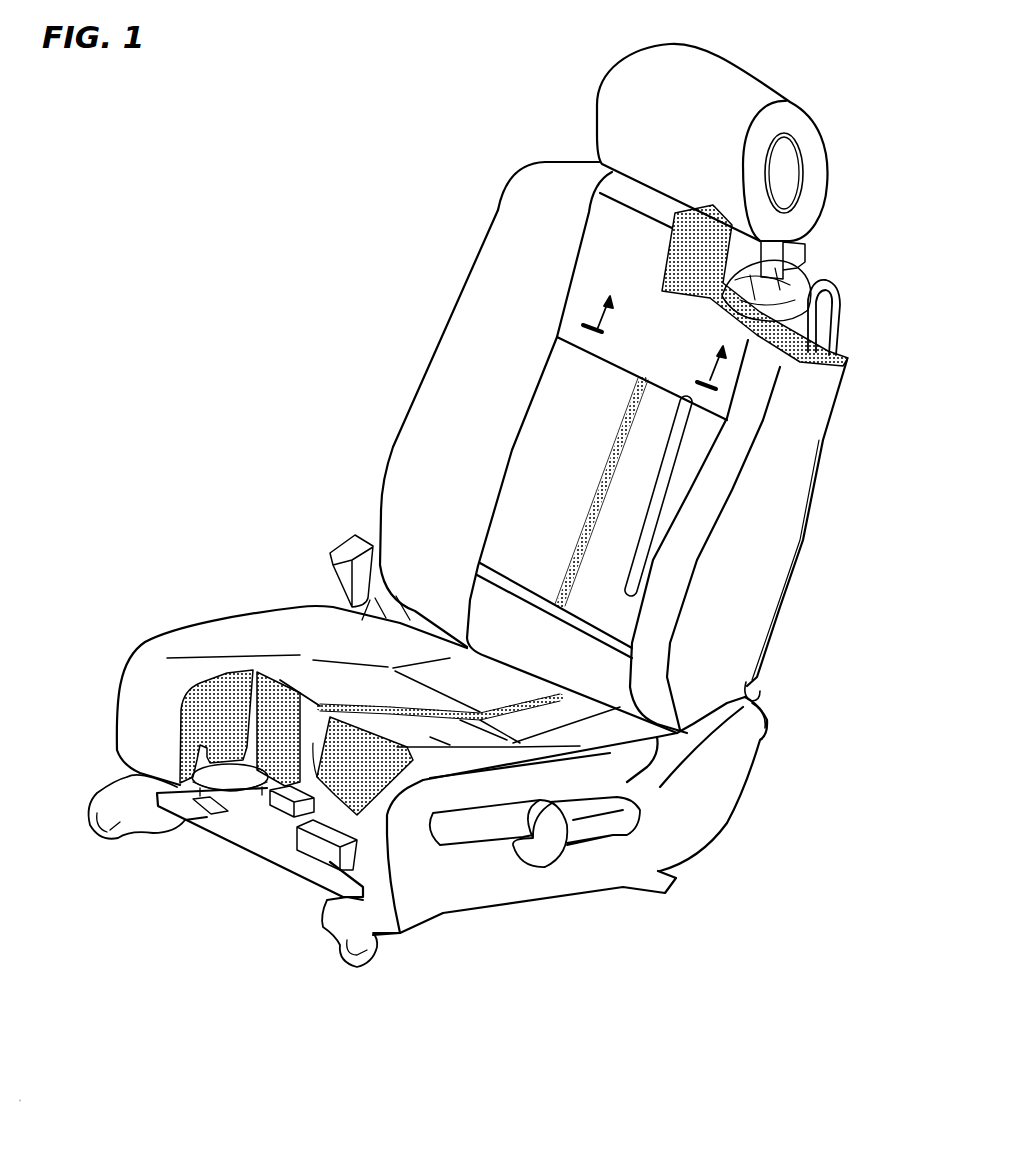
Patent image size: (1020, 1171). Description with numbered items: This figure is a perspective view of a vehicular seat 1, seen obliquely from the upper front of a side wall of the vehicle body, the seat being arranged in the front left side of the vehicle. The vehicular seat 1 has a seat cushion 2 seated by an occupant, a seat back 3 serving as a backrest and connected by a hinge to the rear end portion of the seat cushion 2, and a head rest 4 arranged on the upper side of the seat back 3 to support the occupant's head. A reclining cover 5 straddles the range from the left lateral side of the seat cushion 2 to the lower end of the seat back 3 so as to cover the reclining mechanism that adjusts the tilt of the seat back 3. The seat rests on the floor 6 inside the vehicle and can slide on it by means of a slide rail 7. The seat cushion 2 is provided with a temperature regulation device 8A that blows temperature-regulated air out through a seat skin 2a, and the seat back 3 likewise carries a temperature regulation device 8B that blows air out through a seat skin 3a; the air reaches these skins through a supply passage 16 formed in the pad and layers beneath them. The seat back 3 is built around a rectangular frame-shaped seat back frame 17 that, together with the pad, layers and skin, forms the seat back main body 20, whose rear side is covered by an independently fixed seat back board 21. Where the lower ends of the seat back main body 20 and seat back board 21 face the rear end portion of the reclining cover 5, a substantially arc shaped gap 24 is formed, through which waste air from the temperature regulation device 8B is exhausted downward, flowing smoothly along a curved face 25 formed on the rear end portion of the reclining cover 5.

The vehicular seat 1 is at (473, 555).
The seat cushion 2 is at (368, 659).
The seat skin 2a is at (343, 670).
The seat back 3 is at (627, 586).
The seat skin 3a is at (548, 392).
The head rest 4 is at (610, 108).
The reclining cover 5 is at (697, 810).
The floor 6 is at (103, 900).
The slide rail 7 is at (120, 780).
The temperature regulation device 8A is at (280, 807).
The temperature regulation device 8B is at (720, 297).
The supply passage 16 is at (652, 527).
The seat back frame 17 is at (837, 330).
The seat back main body 20 is at (417, 450).
The seat back board 21 is at (800, 543).
The gap 24 is at (757, 700).
The curved face 25 is at (763, 723).